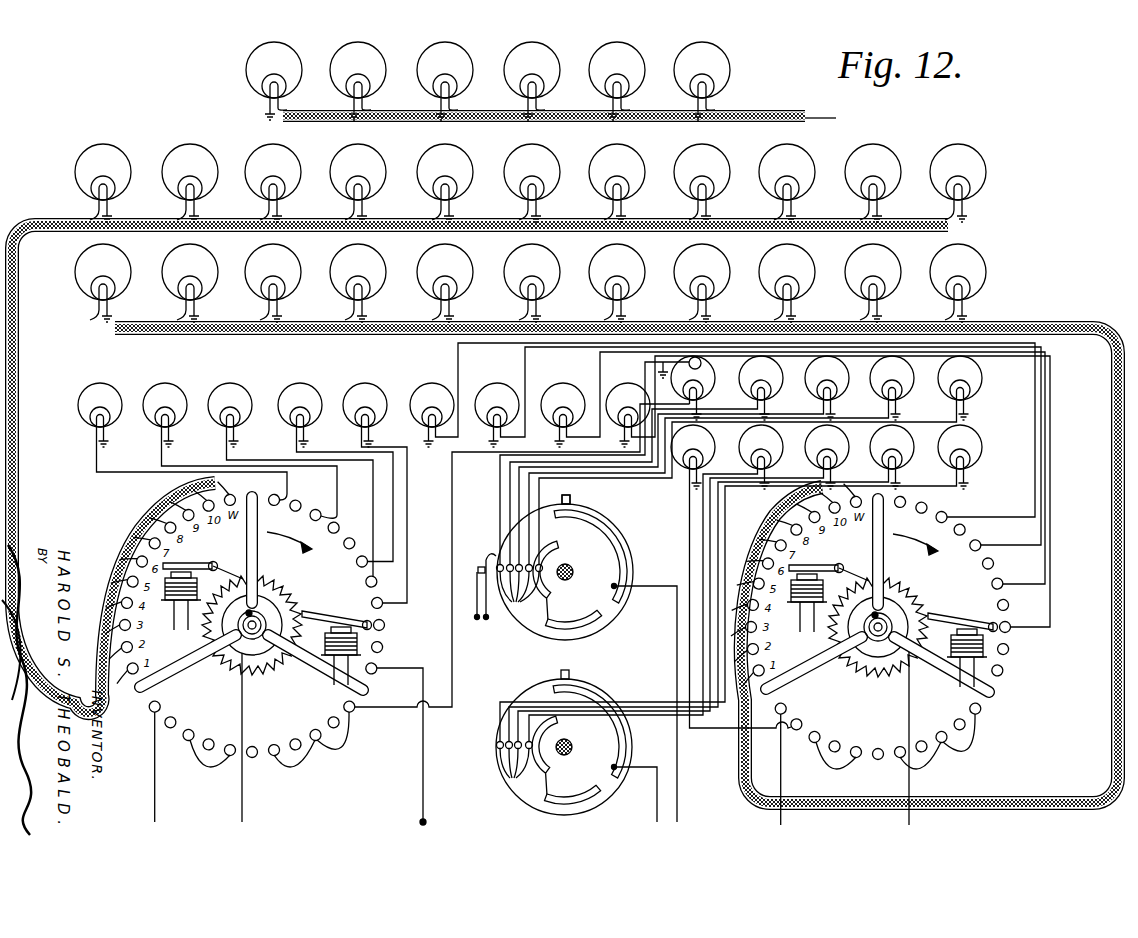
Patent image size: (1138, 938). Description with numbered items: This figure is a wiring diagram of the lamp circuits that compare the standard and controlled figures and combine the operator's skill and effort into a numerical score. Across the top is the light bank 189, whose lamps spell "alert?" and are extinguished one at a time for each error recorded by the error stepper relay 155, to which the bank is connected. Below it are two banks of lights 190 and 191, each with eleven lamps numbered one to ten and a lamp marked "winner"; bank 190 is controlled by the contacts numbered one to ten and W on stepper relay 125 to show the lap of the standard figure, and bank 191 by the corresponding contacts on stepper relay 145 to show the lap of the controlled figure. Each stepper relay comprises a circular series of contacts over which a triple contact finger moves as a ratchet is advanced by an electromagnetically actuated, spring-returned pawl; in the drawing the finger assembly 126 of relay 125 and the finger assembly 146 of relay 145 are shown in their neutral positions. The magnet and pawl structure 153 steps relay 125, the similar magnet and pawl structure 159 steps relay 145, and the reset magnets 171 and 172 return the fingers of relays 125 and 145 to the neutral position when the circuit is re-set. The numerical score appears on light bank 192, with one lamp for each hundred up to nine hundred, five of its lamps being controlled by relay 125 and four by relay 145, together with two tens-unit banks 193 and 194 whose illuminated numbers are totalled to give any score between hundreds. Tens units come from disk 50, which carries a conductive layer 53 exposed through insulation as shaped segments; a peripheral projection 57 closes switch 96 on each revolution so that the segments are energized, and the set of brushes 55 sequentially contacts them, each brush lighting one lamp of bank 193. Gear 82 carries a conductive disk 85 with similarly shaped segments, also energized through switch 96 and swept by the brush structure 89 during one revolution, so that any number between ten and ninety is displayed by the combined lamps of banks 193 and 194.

The light bank 189 is at (250, 52).
The bank of lights 190 is at (84, 150).
The bank of lights 191 is at (76, 263).
The light bank 192 is at (84, 393).
The light bank 193 is at (983, 376).
The light bank 194 is at (983, 441).
The error stepper relay 155 is at (883, 120).
The stepping switch wiper assembly 126 is at (258, 566).
The reset magnet 171 is at (166, 600).
The magnet and pawl structure 153 is at (331, 640).
The stepper relay 125 is at (295, 732).
The second stepping switch wiper assembly 146 is at (884, 568).
The reset magnet 172 is at (794, 602).
The magnet and pawl structure 159 is at (957, 642).
The stepper relay 145 is at (960, 708).
The disk 50 is at (596, 628).
The conductive layer 53 is at (622, 541).
The peripheral projection 57 is at (569, 496).
The brushes 55 is at (520, 588).
The switch 96 is at (475, 587).
The gear 82 is at (598, 806).
The disk of conductive material 85 is at (597, 690).
The brush structure 89 is at (515, 764).